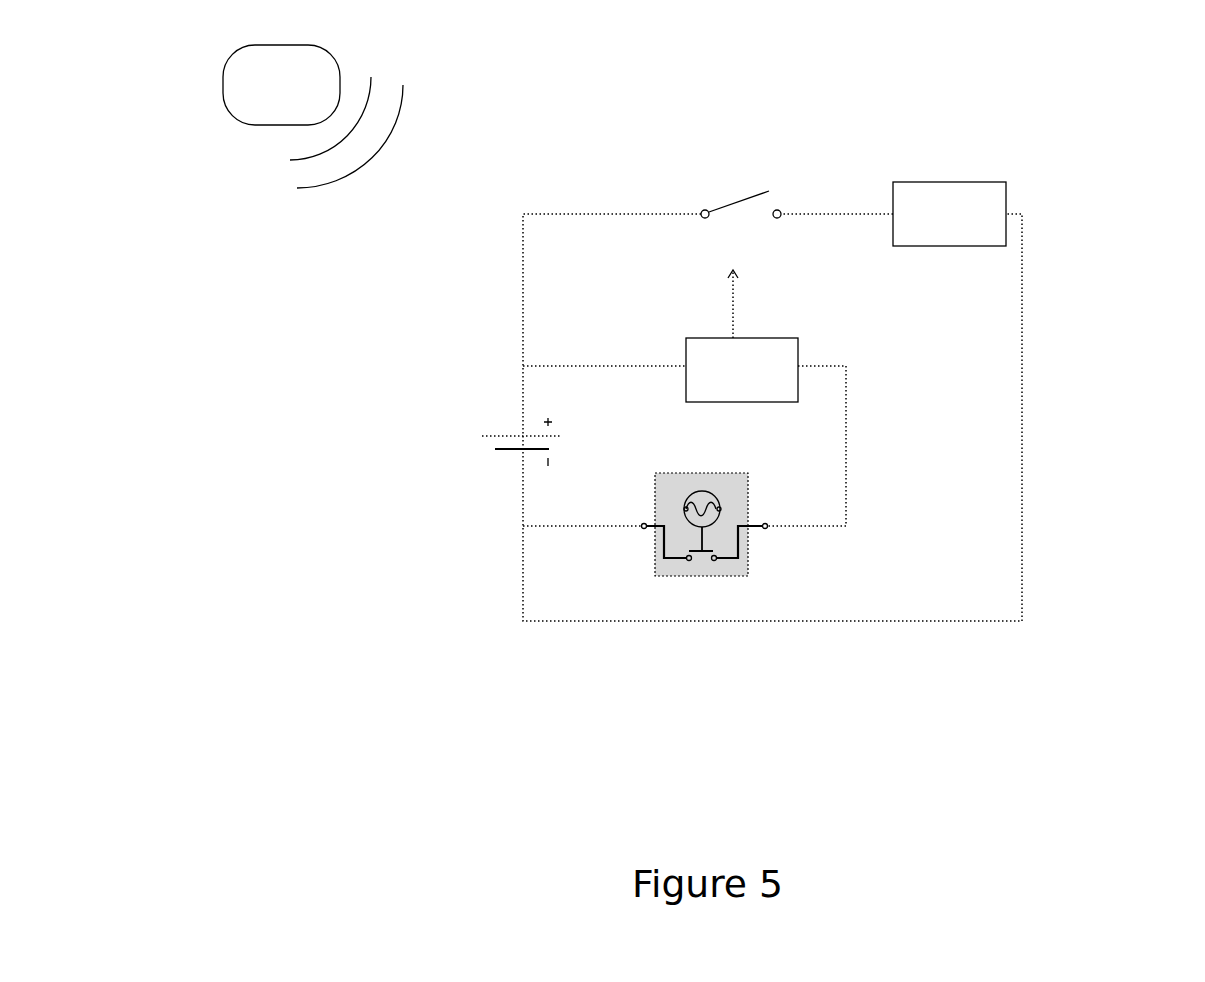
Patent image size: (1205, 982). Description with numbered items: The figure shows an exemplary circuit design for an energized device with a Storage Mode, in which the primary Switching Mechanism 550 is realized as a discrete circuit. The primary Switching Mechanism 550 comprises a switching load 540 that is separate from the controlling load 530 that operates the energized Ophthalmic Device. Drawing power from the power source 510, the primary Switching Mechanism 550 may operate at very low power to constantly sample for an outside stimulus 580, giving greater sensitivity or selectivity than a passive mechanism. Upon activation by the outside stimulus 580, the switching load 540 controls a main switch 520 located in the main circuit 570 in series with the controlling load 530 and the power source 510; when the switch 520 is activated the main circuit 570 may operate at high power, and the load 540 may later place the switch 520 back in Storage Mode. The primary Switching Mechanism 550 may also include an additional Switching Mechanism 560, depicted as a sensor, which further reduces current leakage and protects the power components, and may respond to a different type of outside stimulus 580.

The power source 510 is at (495, 449).
The main switch 520 is at (753, 196).
The controlling load 530 is at (970, 192).
The switching load 540 is at (798, 338).
The primary Switching Mechanism 550 is at (846, 510).
The additional Switching Mechanism 560 is at (740, 543).
The main circuit 570 is at (643, 621).
The outside stimulus 580 is at (222, 85).